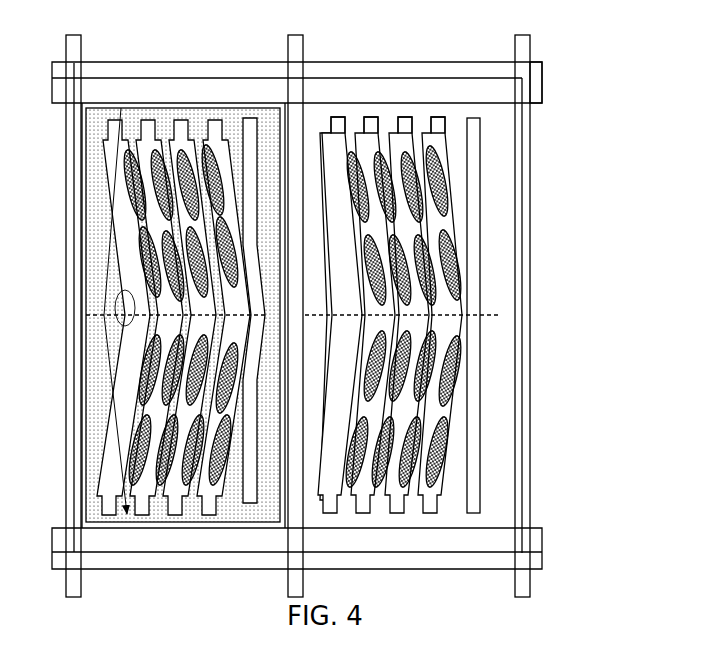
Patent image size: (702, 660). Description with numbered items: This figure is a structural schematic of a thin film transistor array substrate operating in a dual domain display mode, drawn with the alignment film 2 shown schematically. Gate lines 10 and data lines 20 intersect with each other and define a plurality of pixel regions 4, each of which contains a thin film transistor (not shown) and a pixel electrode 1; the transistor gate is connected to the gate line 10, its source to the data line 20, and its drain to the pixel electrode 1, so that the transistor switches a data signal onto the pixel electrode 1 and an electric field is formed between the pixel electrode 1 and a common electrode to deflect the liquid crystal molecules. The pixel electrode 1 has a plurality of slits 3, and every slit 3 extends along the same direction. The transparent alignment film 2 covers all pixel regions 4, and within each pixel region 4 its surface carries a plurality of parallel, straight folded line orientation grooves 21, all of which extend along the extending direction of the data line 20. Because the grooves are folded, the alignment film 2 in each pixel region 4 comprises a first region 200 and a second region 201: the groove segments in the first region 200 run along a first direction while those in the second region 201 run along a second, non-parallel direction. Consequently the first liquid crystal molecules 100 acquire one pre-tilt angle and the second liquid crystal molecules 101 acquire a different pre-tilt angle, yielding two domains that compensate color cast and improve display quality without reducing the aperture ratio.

The pixel electrode 1 is at (497, 203).
The alignment film 2 is at (208, 97).
The slit 3 is at (477, 118).
The pixel region 4 is at (122, 105).
The gate line 10 is at (541, 85).
The data line 20 is at (522, 47).
The orientation groove 21 is at (437, 133).
The first liquid crystal molecules 100 is at (465, 258).
The second liquid crystal molecules 101 is at (448, 468).
The first region 200 is at (523, 172).
The second region 201 is at (521, 442).